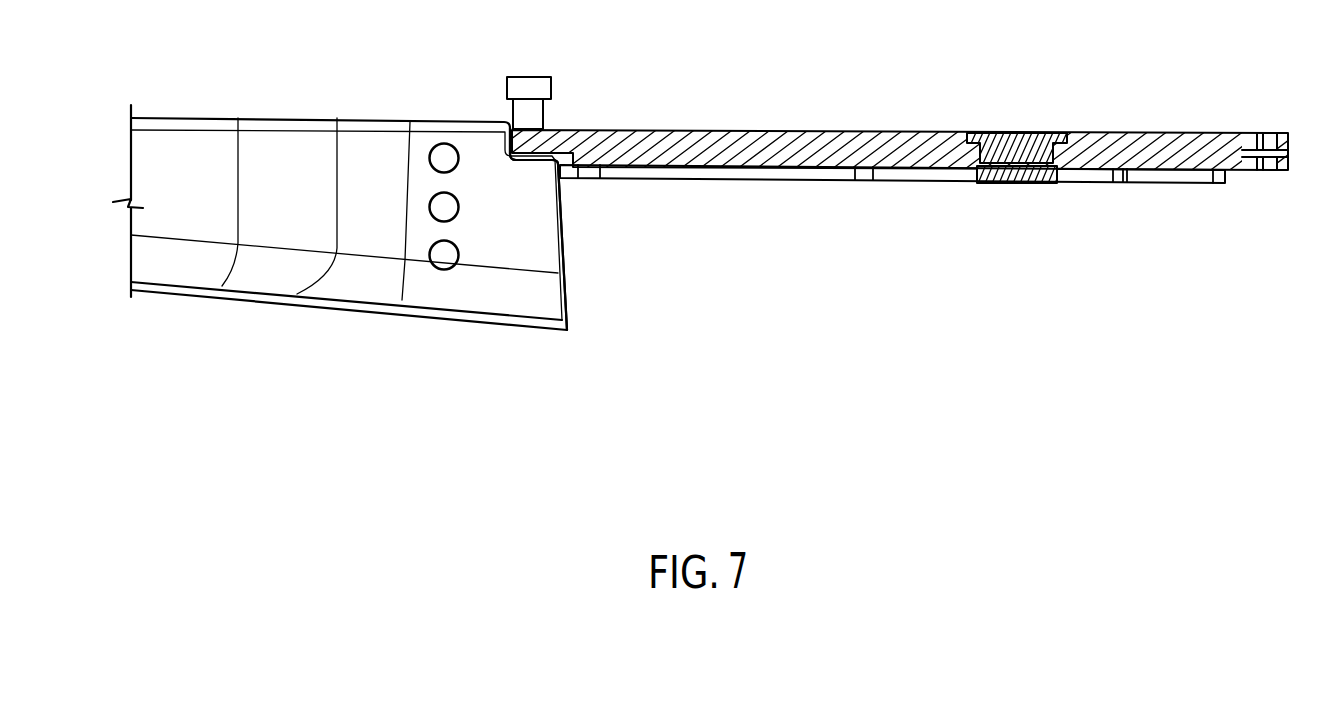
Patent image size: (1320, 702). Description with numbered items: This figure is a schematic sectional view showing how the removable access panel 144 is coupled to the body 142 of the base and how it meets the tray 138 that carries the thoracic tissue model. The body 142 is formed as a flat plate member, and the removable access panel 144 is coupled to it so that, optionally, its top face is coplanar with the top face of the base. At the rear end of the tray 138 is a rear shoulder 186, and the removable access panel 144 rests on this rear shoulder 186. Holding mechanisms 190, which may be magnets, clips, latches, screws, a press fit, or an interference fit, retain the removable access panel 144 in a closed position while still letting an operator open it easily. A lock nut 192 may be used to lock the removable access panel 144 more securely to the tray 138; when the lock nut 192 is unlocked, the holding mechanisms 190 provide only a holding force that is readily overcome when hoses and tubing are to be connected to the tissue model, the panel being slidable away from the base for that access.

The tray 138 is at (339, 103).
The body 142 is at (720, 182).
The removable access panel 144 is at (770, 131).
The rear shoulder 186 is at (533, 167).
The holding mechanisms 190 is at (1057, 157).
The lock nut 192 is at (532, 88).